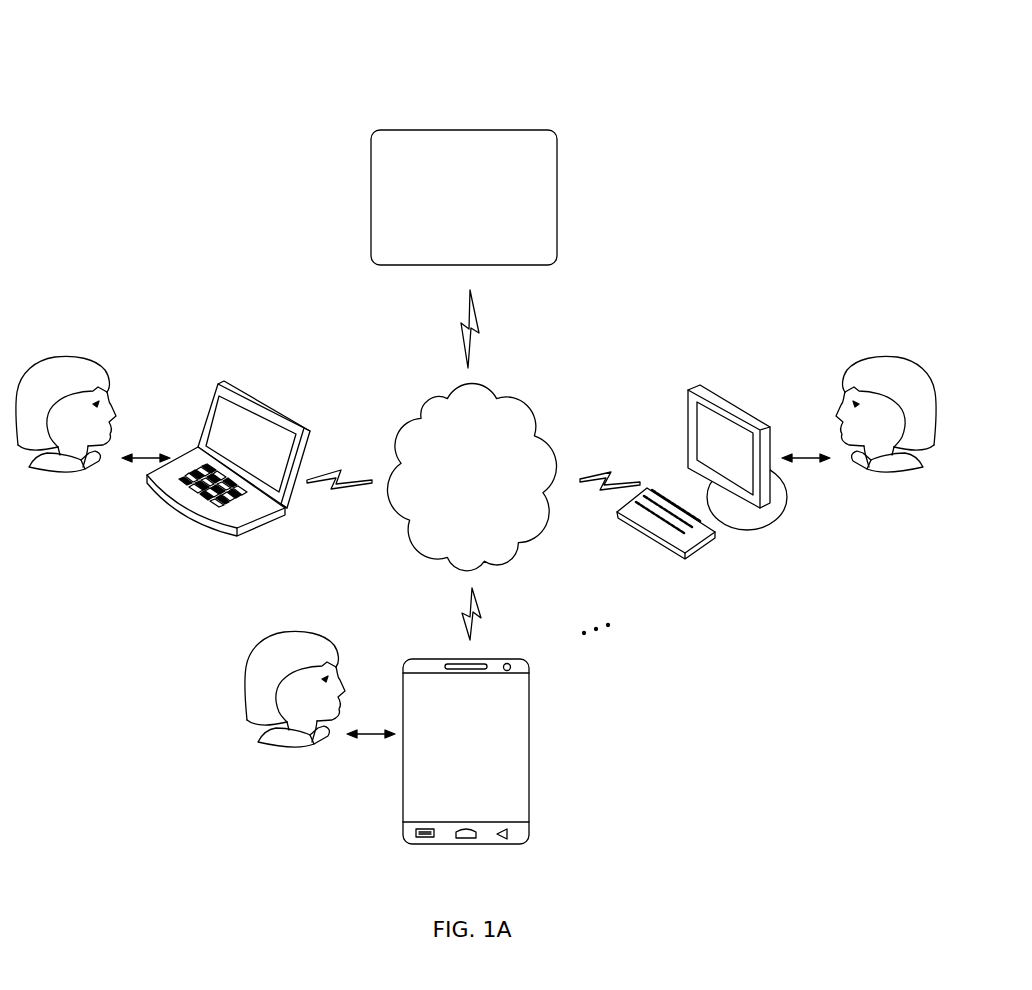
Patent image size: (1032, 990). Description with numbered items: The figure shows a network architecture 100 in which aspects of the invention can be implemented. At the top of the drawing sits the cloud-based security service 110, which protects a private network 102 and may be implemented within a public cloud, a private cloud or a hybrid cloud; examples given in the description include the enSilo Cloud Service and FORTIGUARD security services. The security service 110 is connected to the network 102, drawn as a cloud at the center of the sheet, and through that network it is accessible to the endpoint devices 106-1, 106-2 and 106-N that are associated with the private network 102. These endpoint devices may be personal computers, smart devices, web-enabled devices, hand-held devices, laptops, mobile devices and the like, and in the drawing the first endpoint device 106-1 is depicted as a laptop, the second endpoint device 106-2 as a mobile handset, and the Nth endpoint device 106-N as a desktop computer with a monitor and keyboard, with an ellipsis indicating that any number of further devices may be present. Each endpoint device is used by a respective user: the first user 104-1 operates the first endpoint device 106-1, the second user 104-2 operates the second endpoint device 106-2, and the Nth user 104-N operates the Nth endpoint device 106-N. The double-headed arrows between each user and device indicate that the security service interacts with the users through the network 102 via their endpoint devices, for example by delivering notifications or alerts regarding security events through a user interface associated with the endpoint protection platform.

The network architecture 100 is at (100, 70).
The private network 102 is at (460, 495).
The user 104-1 is at (47, 516).
The user 104-2 is at (275, 790).
The user 104-N is at (863, 516).
The endpoint device 106-1 is at (217, 578).
The endpoint device 106-2 is at (446, 781).
The endpoint device 106-N is at (710, 593).
The cloud-based security service 110 is at (451, 228).